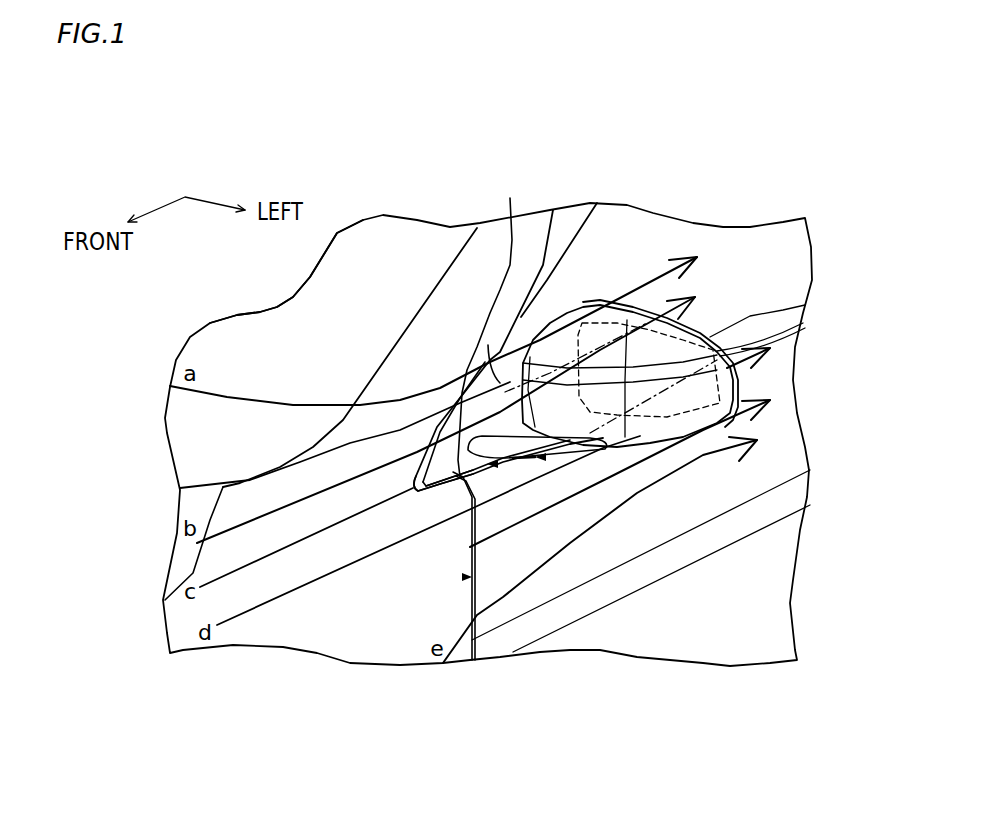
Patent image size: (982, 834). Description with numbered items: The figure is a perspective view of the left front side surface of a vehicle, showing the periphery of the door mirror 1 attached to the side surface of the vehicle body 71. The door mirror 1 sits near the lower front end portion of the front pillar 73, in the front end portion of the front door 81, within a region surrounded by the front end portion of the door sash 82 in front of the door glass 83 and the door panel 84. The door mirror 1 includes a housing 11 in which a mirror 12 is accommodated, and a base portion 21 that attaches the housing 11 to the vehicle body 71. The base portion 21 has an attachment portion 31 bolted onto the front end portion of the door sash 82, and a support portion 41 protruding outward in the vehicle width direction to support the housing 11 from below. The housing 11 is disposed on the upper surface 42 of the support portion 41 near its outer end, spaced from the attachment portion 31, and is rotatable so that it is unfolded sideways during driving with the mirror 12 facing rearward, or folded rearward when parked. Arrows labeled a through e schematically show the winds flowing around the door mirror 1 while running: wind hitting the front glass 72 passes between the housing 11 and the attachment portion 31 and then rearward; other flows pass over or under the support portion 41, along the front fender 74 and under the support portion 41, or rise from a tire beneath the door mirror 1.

The door mirror 1 is at (707, 318).
The housing 11 is at (803, 324).
The mirror 12 is at (737, 377).
The base portion 21 is at (488, 464).
The attachment portion 31 is at (489, 323).
The support portion 41 is at (543, 458).
The upper surface 42 is at (463, 393).
The vehicle body 71 is at (818, 230).
The front glass 72 is at (360, 237).
The front pillar 73 is at (470, 250).
The front fender 74 is at (330, 622).
The front door 81 is at (462, 577).
The door sash 82 is at (575, 210).
The door glass 83 is at (652, 230).
The door panel 84 is at (777, 458).